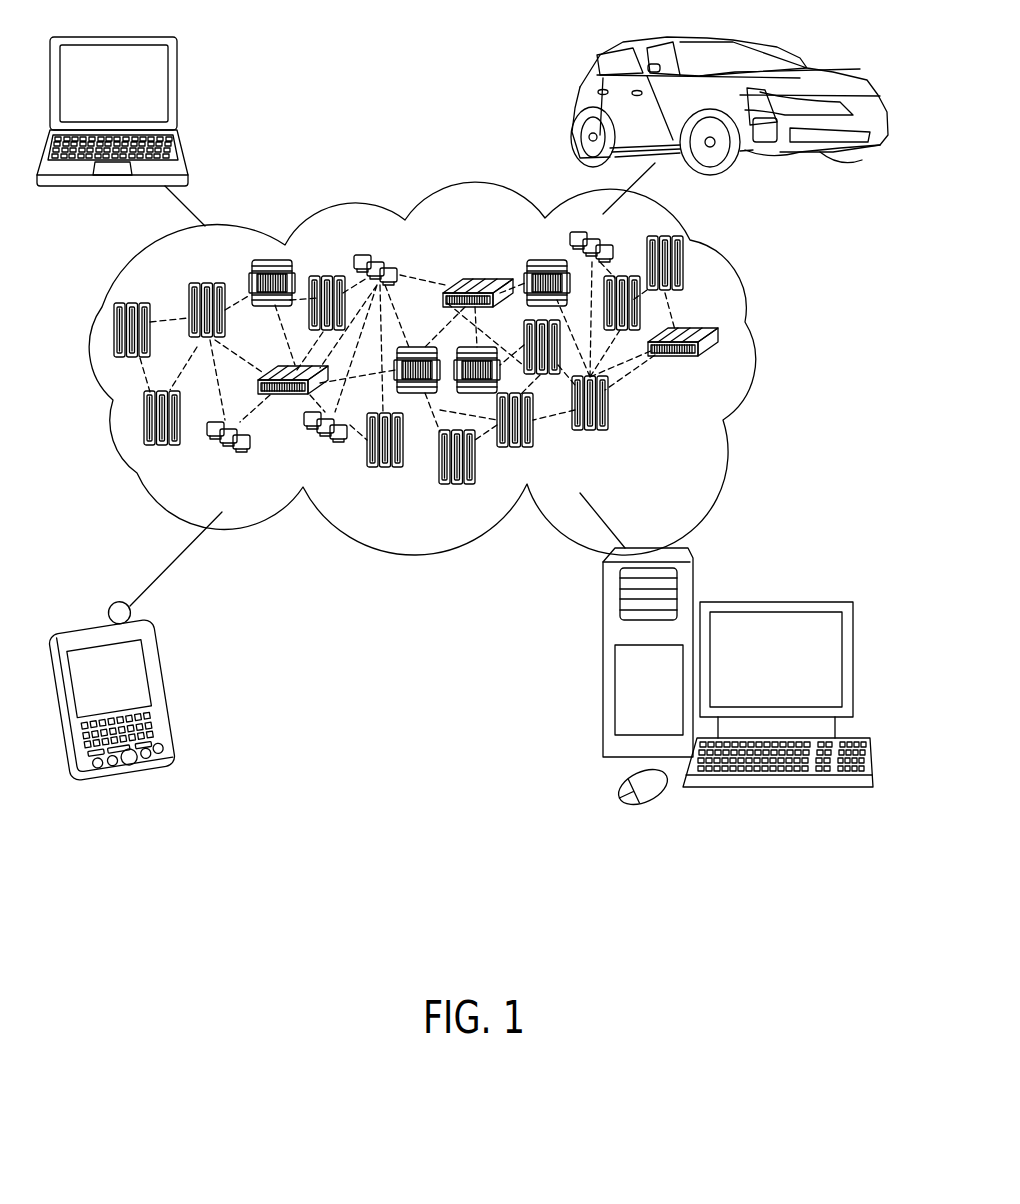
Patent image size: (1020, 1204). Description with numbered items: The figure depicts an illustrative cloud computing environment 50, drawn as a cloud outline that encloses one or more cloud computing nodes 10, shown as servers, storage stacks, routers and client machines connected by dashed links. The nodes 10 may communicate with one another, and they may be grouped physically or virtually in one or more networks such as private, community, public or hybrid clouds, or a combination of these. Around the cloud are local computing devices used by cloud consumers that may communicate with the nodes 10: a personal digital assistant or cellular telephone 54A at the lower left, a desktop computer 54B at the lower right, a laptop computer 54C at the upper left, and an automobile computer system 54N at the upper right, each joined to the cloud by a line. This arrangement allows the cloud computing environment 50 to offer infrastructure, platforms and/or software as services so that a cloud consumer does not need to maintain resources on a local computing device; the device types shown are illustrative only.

The cloud computing nodes 10 is at (722, 367).
The cloud computing environment 50 is at (775, 340).
The personal digital assistant (PDA) or cellular telephone 54A is at (169, 690).
The desktop computer 54B is at (773, 602).
The laptop computer 54C is at (176, 93).
The automobile computer system 54N is at (576, 108).